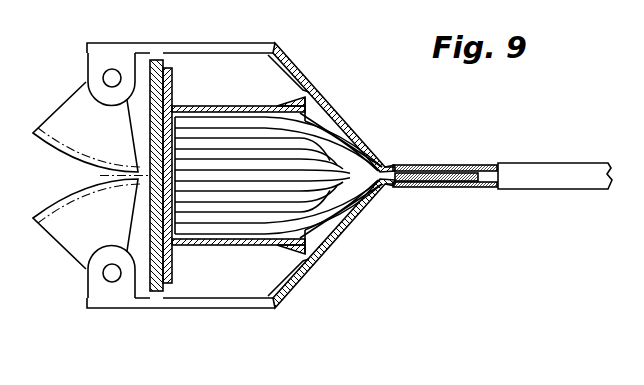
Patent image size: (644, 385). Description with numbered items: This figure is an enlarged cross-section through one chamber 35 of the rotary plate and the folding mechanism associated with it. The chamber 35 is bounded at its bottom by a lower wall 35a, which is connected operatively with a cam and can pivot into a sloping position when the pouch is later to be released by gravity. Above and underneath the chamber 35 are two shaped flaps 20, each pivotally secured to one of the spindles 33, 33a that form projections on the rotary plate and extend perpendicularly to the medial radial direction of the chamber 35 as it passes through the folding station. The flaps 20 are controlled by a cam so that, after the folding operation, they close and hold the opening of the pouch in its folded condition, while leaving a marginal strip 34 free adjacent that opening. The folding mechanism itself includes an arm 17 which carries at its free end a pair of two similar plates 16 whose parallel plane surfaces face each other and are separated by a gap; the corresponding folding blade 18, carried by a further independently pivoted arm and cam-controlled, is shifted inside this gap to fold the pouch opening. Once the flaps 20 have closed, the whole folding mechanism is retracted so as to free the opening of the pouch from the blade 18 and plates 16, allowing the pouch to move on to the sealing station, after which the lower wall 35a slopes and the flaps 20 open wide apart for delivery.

The plates 16 is at (482, 168).
The arm 17 is at (552, 170).
The folding blade 18 is at (430, 176).
The shaped flaps 20 is at (346, 126).
The spindle 33 is at (110, 78).
The spindle 33a is at (110, 273).
The marginal strip 34 is at (388, 184).
The chamber 35 is at (222, 104).
The lower wall 35a is at (240, 247).